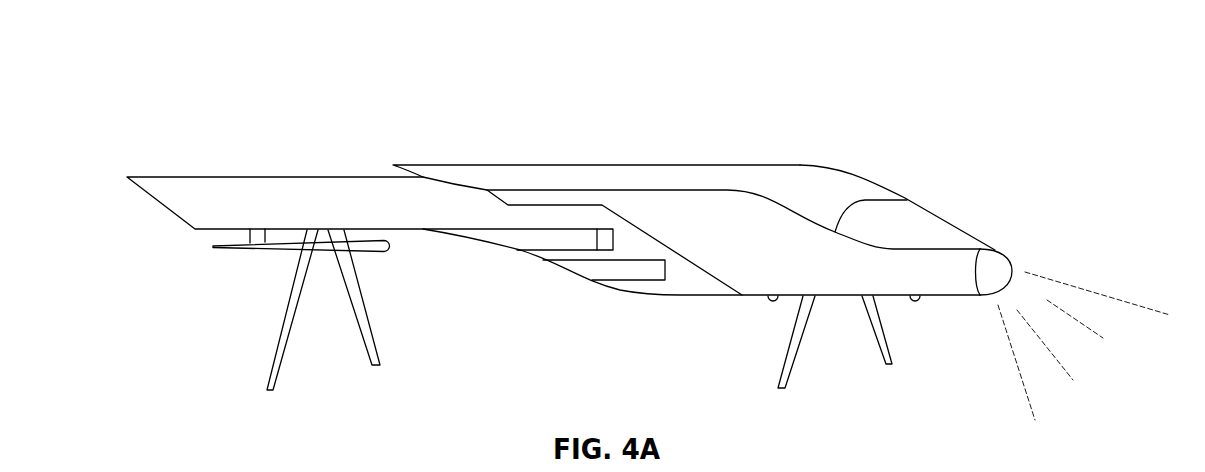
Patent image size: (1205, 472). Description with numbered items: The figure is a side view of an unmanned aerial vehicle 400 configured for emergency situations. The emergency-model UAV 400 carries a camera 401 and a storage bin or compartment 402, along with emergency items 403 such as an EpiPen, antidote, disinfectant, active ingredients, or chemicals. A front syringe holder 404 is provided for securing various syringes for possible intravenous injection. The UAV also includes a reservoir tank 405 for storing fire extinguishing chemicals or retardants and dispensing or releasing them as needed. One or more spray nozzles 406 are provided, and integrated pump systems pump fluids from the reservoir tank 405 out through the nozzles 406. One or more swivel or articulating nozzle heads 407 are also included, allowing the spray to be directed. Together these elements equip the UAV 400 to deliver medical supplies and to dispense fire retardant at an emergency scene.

The aircraft 400 is at (148, 138).
The camera 401 is at (940, 215).
The storage bin or compartment 402 is at (163, 205).
The EpiPen, antidote, disinfectant, active ingredients, or chemicals 403 is at (250, 253).
The front syringe holder 404 is at (767, 297).
The reservoir tank 405 is at (838, 282).
The spray nozzles 406 is at (1085, 355).
The swivel or articulating nozzle heads 407 is at (1003, 252).